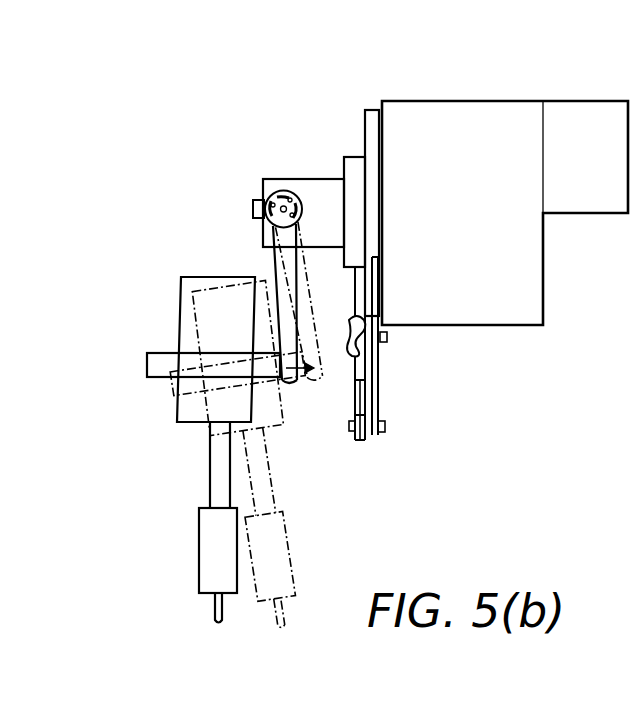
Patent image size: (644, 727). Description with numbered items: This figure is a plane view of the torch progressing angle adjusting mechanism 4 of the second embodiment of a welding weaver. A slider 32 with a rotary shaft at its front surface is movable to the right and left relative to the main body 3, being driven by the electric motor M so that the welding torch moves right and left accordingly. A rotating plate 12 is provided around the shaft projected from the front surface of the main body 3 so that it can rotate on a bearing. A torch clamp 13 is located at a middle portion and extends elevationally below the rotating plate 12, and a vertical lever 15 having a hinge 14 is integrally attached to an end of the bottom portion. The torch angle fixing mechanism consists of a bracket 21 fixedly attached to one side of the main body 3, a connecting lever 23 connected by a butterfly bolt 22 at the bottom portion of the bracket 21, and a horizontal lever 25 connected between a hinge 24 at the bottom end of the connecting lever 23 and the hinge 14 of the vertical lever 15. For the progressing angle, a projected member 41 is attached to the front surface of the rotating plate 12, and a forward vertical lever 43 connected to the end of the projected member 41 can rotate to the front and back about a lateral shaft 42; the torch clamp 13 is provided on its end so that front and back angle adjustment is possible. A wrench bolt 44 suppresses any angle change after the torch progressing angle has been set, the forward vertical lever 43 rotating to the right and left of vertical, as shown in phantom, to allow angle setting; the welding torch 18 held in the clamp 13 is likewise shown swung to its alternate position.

The main body 3 is at (500, 122).
The torch progressing angle adjusting mechanism 4 is at (140, 252).
The rotating plate 12 is at (355, 160).
The torch clamp 13 is at (155, 365).
The hinge 14 is at (367, 426).
The vertical lever 15 is at (373, 378).
The container 18 is at (207, 547).
The bracket 21 is at (377, 288).
The butterfly bolt 22 is at (363, 347).
The connecting lever 23 is at (375, 403).
The hinge 24 is at (378, 428).
The horizontal lever 25 is at (365, 442).
The slider 32 is at (375, 115).
The projected member 41 is at (318, 192).
The lateral shaft 42 is at (283, 206).
The forward vertical lever 43 is at (278, 258).
The wrench bolt 44 is at (260, 203).
The electric motor M is at (585, 154).